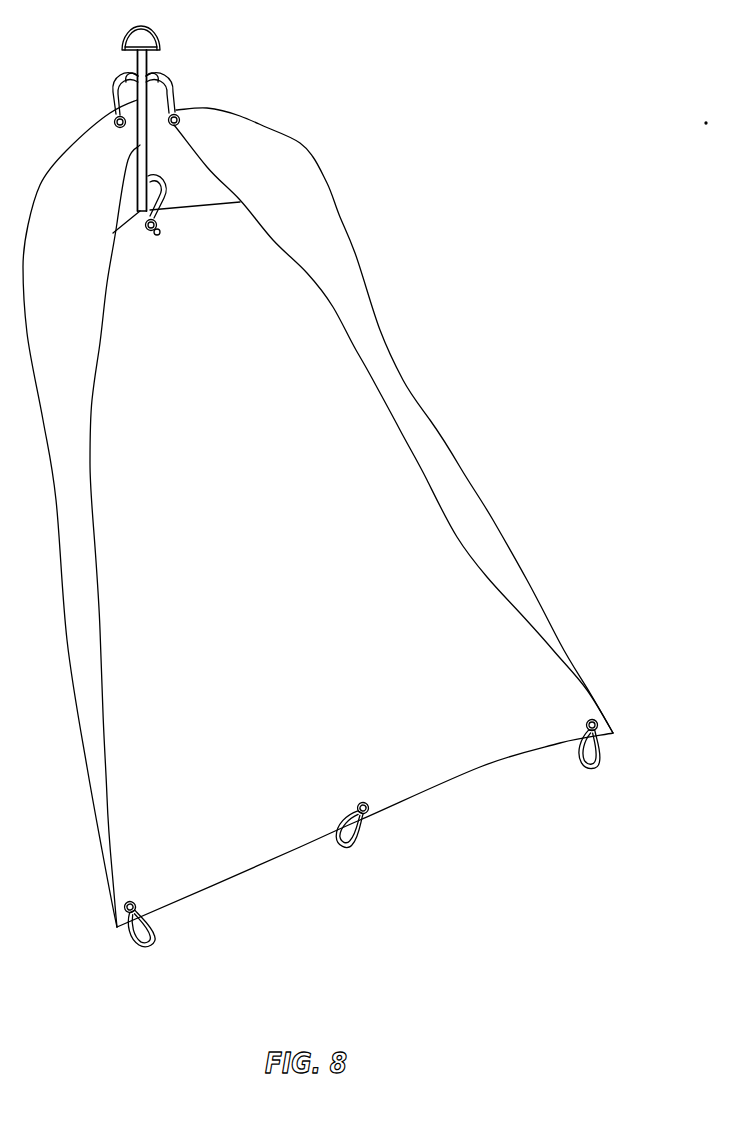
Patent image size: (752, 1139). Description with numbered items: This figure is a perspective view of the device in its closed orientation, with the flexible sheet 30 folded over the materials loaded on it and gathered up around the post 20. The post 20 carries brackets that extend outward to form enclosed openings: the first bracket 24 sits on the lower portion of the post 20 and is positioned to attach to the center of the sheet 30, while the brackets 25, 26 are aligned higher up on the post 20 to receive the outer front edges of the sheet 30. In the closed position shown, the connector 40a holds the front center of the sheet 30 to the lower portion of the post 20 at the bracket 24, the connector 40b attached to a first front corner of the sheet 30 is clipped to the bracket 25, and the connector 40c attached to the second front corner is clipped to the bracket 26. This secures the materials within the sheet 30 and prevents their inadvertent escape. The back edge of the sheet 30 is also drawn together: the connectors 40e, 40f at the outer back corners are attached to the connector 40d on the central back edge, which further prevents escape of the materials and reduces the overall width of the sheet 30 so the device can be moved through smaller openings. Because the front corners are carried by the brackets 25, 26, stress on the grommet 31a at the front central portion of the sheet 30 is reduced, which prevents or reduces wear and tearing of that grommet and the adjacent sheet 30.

The post 20 is at (140, 147).
The first bracket 24 is at (150, 180).
The bracket 25 is at (153, 73).
The bracket 26 is at (133, 75).
The sheet 30 is at (311, 624).
The grommet 31a is at (160, 233).
The connector 40a is at (167, 192).
The connector 40b is at (176, 98).
The connector 40c is at (116, 93).
The connector 40d is at (360, 843).
The connector 40e is at (598, 773).
The connector 40f is at (133, 943).